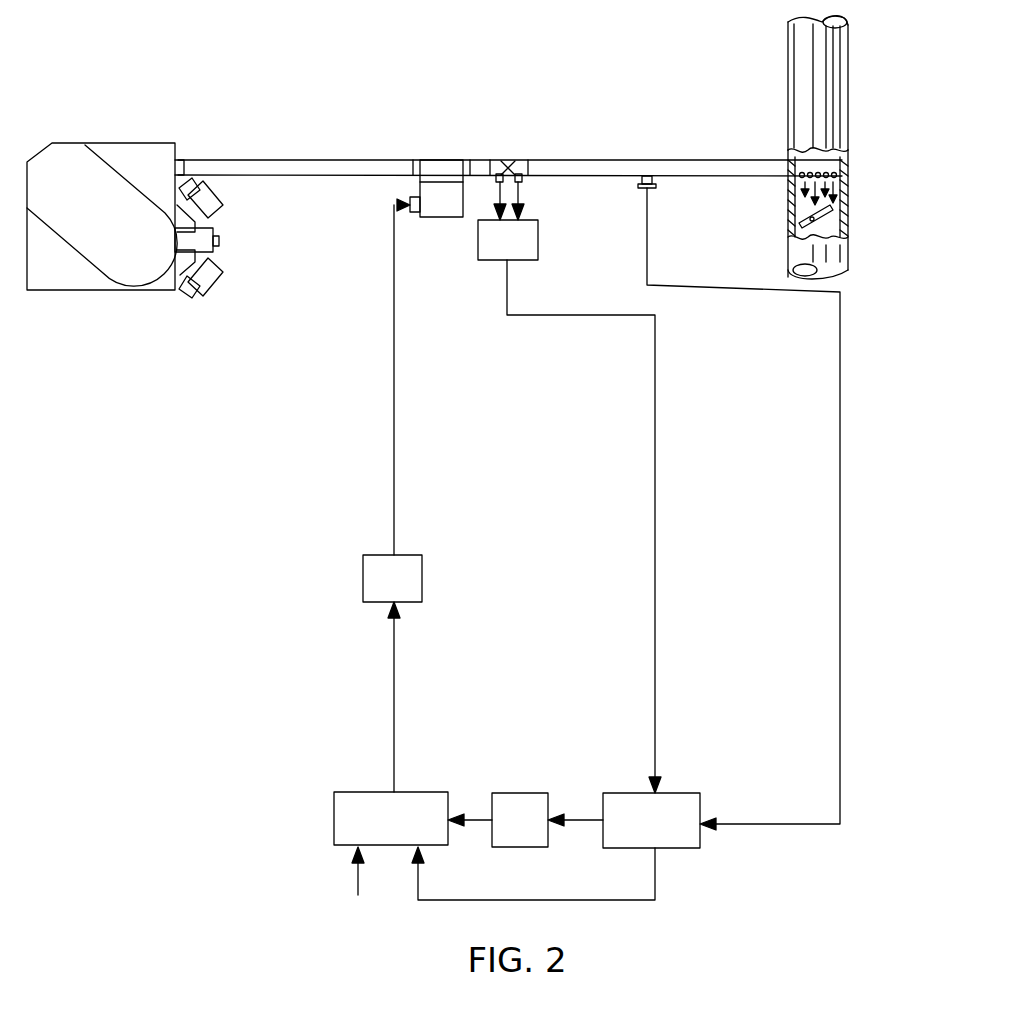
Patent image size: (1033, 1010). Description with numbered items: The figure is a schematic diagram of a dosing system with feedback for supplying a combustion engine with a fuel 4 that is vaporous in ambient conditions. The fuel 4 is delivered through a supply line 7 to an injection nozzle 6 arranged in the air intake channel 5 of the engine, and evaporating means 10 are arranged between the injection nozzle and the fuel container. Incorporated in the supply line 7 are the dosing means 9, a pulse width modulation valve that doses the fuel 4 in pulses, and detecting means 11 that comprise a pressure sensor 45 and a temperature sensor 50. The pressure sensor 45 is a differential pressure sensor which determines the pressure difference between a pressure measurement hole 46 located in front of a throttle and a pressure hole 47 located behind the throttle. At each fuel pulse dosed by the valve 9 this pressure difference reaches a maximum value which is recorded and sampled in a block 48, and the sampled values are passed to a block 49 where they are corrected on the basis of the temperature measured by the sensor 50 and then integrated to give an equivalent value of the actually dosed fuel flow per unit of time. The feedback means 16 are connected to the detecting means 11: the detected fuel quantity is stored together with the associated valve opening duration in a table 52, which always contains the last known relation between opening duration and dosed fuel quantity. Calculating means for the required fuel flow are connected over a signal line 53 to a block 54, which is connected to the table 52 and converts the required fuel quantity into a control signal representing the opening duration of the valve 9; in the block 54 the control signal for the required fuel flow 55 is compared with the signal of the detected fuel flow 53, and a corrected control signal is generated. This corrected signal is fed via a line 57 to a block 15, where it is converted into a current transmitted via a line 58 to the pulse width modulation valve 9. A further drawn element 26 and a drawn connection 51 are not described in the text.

The evaporating means 10 is at (142, 140).
The supply line 7 is at (357, 125).
The dosing means 9 is at (450, 156).
The pressure sensor 45 is at (510, 158).
The pressure measurement hole 46 is at (495, 197).
The pressure hole 47 is at (525, 192).
The block 48 is at (530, 240).
The temperature sensor 50 is at (656, 162).
The air intake channel 5 is at (802, 70).
The injection nozzle 6 is at (852, 176).
The fuel 4 is at (800, 197).
The deflecting mirror 26 is at (832, 224).
The line 58 is at (394, 485).
The block 15 is at (372, 565).
The line 57 is at (394, 736).
The feedback means 16 is at (322, 785).
The block 54 is at (430, 806).
The table 52 is at (528, 805).
The detecting means 11 is at (705, 788).
The block 49 is at (625, 805).
The signal line 51 is at (586, 824).
The signal line 53 is at (656, 885).
The control signal for the required fuel flow 55 is at (358, 870).